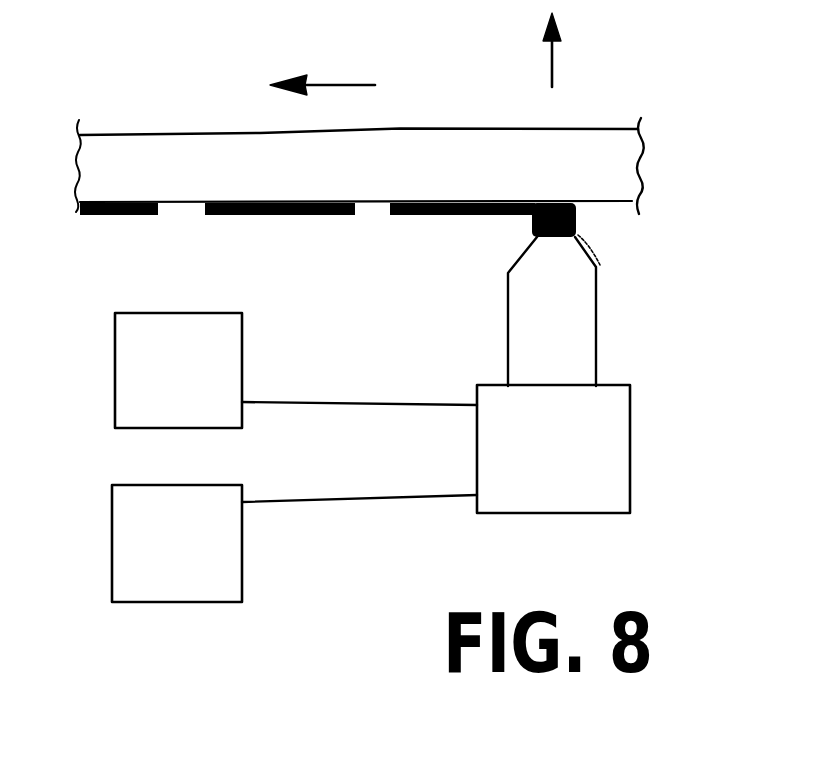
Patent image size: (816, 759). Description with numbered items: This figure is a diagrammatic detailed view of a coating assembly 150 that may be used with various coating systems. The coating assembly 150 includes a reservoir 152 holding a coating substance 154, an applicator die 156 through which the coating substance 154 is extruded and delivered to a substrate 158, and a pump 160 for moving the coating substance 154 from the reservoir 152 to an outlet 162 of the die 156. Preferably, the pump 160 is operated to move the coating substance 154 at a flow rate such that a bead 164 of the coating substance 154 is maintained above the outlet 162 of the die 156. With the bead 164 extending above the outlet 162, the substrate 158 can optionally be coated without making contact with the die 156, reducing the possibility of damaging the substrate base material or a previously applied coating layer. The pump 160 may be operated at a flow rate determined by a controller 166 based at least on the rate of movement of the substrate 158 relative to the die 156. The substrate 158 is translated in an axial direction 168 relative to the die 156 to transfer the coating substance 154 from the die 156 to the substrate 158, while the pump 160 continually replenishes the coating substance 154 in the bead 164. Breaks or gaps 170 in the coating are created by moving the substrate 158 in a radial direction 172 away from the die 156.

The coating assembly 150 is at (697, 306).
The reservoir 152 is at (245, 575).
The coating substance 154 is at (337, 217).
The applicator die 156 is at (508, 305).
The substrate 158 is at (607, 202).
The pump 160 is at (630, 457).
The outlet 162 is at (513, 239).
The bead 164 is at (582, 224).
The controller 166 is at (243, 365).
The axial direction 168 is at (347, 85).
The gaps 170 is at (185, 227).
The radial direction 172 is at (555, 55).